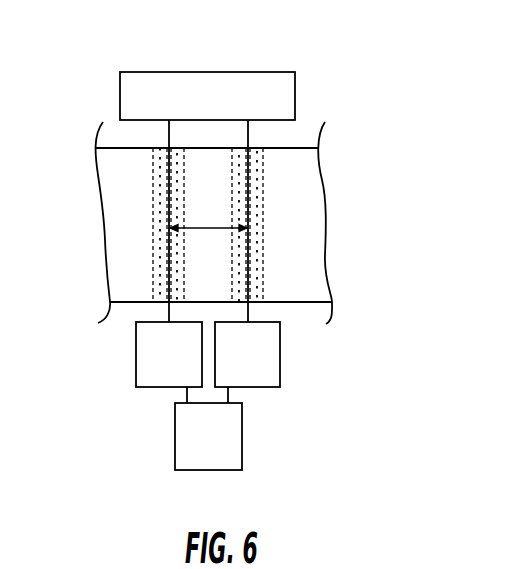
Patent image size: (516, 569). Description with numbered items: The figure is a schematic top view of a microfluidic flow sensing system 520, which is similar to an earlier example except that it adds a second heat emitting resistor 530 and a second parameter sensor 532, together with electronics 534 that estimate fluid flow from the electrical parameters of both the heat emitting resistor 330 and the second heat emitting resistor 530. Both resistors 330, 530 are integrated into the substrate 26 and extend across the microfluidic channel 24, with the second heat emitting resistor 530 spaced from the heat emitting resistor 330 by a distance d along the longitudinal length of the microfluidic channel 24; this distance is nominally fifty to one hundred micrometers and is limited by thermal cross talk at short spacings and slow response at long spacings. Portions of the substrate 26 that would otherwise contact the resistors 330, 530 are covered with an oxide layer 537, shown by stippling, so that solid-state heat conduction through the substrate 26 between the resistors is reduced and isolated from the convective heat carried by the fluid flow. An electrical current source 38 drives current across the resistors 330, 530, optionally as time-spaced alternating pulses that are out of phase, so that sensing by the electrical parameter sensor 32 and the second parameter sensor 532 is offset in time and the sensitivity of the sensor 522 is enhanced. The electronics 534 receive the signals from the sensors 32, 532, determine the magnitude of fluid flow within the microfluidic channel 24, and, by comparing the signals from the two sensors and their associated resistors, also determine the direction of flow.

The electrical current source 38 is at (250, 72).
The microfluidic flow sensing system 520 is at (214, 203).
The substrate 26 is at (302, 148).
The microfluidic channel 24 is at (280, 150).
The oxide layer 537 is at (150, 173).
The second heat emitting resistor 530 is at (163, 242).
The heat emitting resistor 330 is at (252, 270).
The sensor 522 is at (197, 405).
The second parameter sensor 532 is at (136, 357).
The electrical parameter sensor 32 is at (257, 388).
The electronics 534 is at (242, 437).